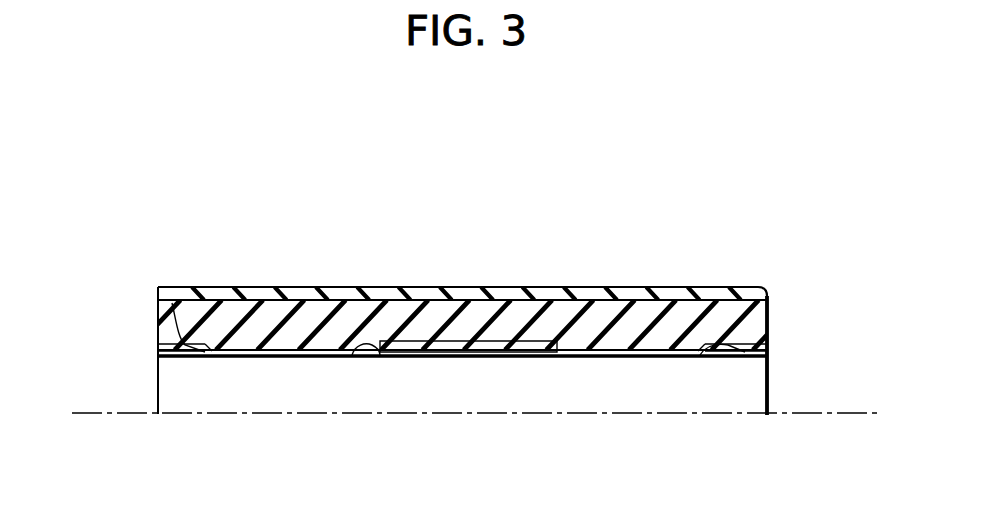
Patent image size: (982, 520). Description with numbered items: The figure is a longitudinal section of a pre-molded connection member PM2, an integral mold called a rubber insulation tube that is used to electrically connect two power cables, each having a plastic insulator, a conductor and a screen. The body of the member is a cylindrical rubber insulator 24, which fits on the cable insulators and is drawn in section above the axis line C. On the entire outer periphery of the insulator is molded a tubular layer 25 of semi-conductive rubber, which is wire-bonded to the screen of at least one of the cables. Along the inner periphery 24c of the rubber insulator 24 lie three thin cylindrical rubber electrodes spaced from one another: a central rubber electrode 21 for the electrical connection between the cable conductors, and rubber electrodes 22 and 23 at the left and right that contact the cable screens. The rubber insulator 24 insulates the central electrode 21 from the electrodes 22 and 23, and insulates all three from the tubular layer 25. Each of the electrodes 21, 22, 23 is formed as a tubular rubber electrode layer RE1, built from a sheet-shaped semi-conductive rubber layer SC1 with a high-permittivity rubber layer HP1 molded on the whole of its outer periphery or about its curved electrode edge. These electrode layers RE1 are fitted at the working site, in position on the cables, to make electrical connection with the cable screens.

The pre-molded connection member PM2 is at (508, 202).
The tubular layer of semi-conductive rubber 25 is at (330, 290).
The cylindrical rubber insulator 24 is at (523, 318).
The inner periphery of the rubber insulator 24c is at (647, 357).
The semi-conductive rubber layer SC1 is at (165, 355).
The high-permittivity rubber layer HP1 is at (190, 345).
The rubber electrode 22 is at (156, 336).
The rubber electrode 23 is at (771, 336).
The rubber electrode 21 is at (479, 360).
The tubular rubber electrode layer RE1 is at (470, 377).
The center line C is at (732, 416).